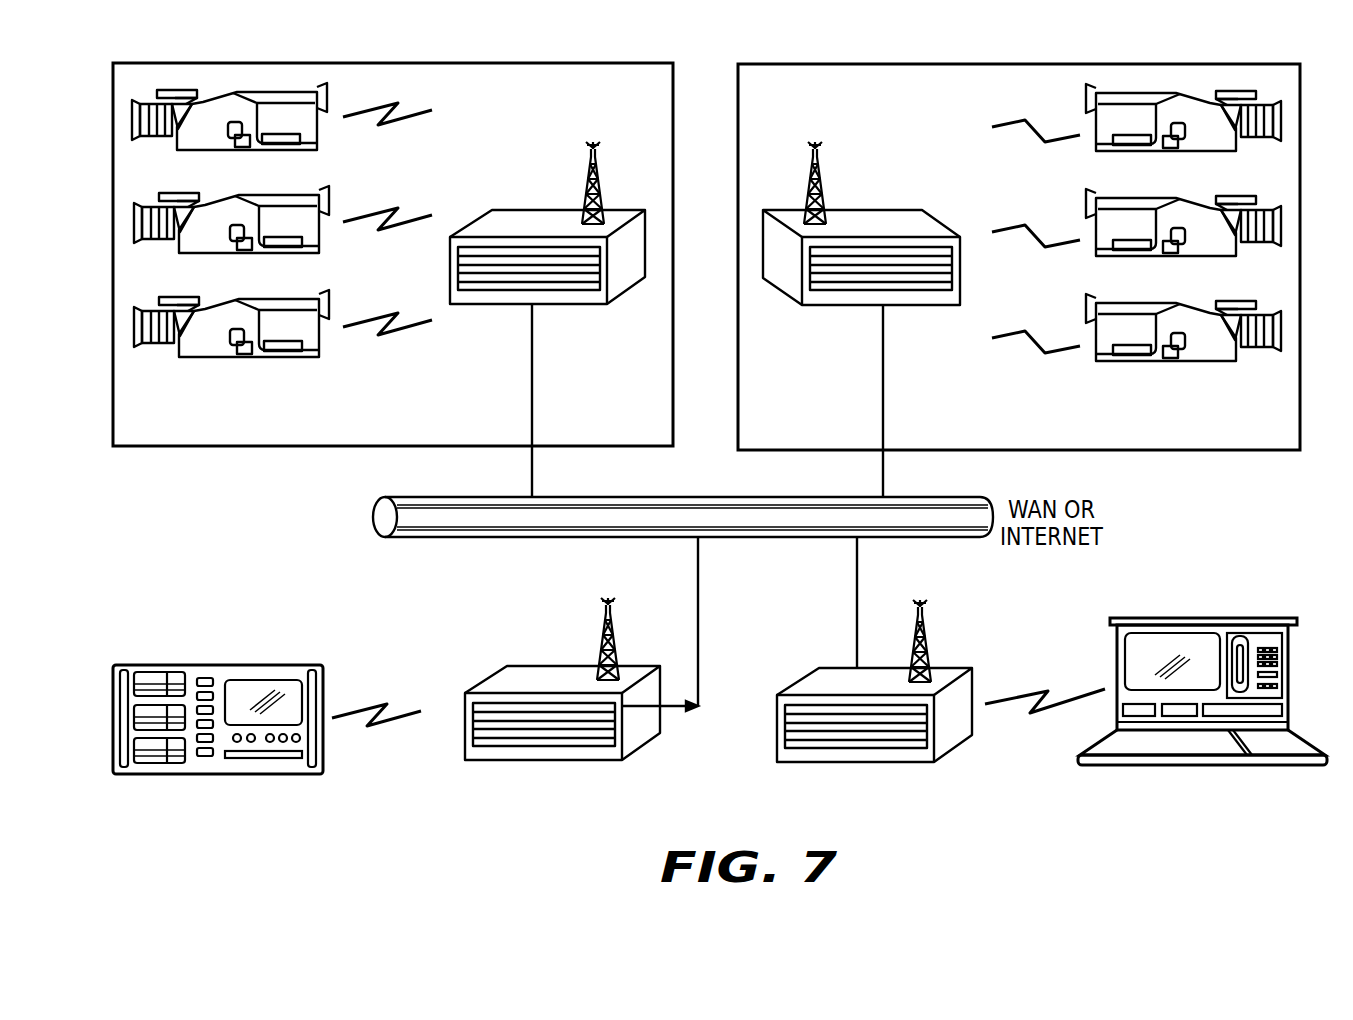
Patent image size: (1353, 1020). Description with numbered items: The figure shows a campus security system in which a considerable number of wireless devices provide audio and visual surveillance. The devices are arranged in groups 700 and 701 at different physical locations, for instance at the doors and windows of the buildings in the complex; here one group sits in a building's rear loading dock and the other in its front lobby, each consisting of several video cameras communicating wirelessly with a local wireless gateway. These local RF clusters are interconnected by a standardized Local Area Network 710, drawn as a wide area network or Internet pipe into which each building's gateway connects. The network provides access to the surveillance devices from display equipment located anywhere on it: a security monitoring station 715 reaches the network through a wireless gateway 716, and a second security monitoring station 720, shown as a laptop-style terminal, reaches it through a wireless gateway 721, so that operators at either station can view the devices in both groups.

The group of wireless devices 700 is at (175, 447).
The group of wireless devices 701 is at (1228, 452).
The Local Area Network 710 is at (460, 540).
The security monitoring station 715 is at (160, 663).
The wireless gateway 716 is at (537, 667).
The security monitoring station 720 is at (1240, 618).
The wireless gateway 721 is at (955, 669).